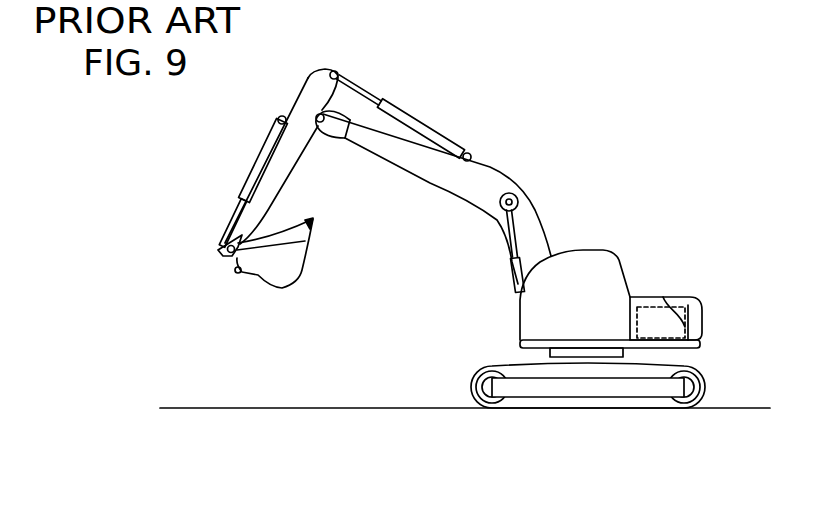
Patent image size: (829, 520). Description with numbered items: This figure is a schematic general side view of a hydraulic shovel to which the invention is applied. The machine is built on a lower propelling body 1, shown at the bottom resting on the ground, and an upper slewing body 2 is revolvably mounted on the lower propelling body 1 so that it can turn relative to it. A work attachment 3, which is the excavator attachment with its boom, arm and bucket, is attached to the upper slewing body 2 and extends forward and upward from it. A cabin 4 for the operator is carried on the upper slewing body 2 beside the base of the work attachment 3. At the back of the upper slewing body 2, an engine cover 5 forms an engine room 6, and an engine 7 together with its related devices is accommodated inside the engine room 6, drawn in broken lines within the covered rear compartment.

The lower propelling body 1 is at (578, 410).
The upper slewing body 2 is at (627, 270).
The work attachment 3 is at (498, 155).
The cabin 4 is at (574, 252).
The engine cover 5 is at (670, 296).
The engine room 6 is at (692, 310).
The engine 7 is at (689, 318).